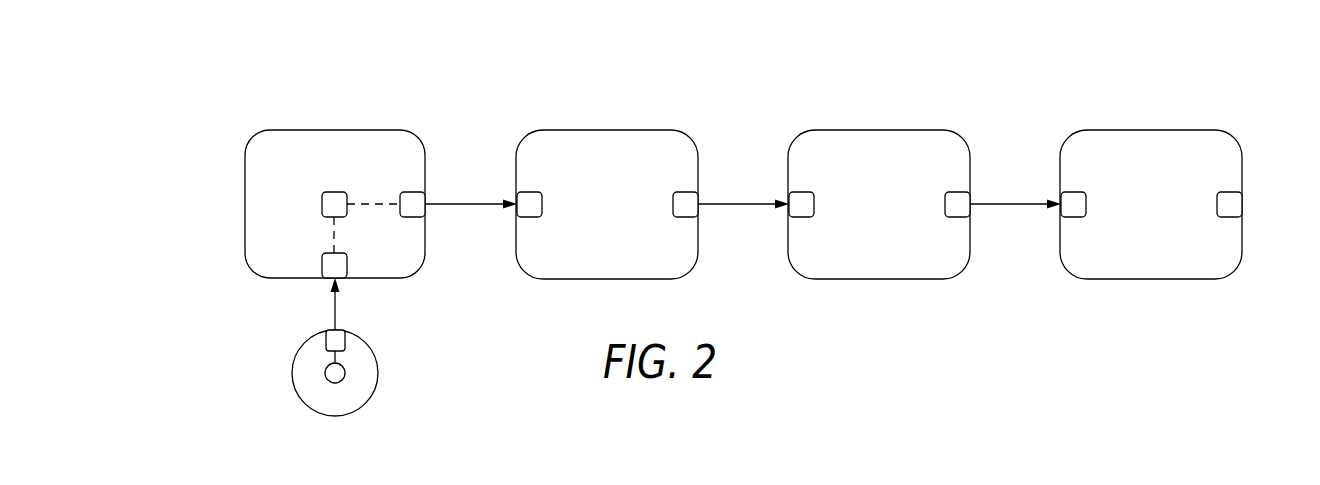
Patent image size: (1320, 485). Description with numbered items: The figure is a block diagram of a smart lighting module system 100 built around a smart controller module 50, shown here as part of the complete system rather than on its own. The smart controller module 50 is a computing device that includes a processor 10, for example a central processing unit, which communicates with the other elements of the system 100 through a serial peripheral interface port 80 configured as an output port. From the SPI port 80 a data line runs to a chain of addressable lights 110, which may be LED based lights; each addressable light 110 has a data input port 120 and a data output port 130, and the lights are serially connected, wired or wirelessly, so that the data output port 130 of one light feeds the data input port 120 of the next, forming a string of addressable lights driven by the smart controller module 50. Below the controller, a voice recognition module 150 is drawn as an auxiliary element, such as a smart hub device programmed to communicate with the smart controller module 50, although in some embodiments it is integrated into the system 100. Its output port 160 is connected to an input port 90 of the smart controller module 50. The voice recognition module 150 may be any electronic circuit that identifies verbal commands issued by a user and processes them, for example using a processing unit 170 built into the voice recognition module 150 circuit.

The smart lighting module system 100 is at (200, 70).
The smart controller module 50 is at (336, 126).
The processor 10 is at (334, 192).
The serial peripheral interface (SPI) port 80 is at (412, 218).
The input port 90 is at (322, 262).
The addressable light 110 is at (608, 126).
The data input port 120 is at (530, 218).
The data output port 130 is at (686, 218).
The voice recognition module 150 is at (382, 375).
The output port 160 is at (345, 340).
The processing unit 170 is at (325, 373).